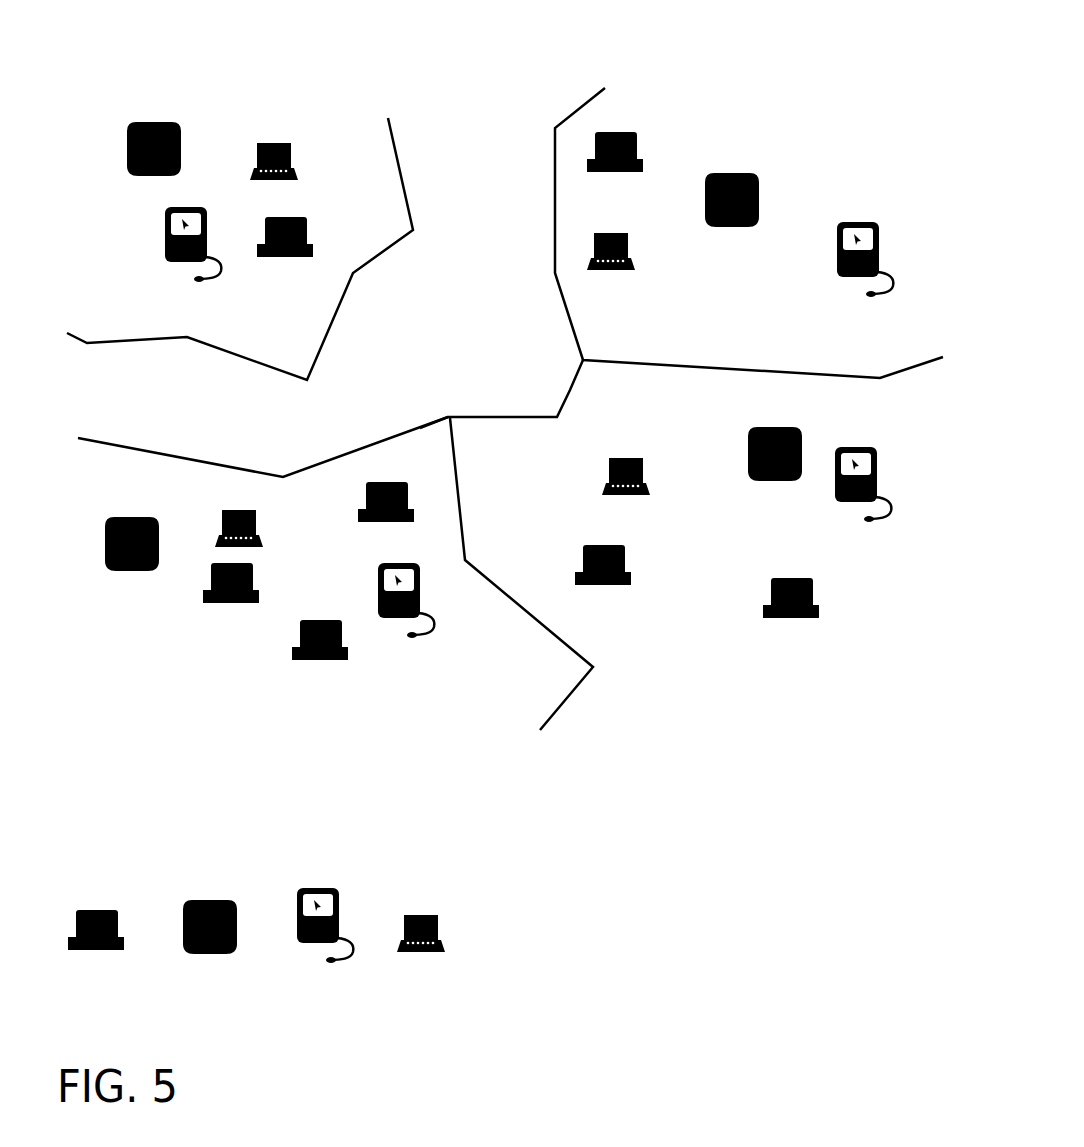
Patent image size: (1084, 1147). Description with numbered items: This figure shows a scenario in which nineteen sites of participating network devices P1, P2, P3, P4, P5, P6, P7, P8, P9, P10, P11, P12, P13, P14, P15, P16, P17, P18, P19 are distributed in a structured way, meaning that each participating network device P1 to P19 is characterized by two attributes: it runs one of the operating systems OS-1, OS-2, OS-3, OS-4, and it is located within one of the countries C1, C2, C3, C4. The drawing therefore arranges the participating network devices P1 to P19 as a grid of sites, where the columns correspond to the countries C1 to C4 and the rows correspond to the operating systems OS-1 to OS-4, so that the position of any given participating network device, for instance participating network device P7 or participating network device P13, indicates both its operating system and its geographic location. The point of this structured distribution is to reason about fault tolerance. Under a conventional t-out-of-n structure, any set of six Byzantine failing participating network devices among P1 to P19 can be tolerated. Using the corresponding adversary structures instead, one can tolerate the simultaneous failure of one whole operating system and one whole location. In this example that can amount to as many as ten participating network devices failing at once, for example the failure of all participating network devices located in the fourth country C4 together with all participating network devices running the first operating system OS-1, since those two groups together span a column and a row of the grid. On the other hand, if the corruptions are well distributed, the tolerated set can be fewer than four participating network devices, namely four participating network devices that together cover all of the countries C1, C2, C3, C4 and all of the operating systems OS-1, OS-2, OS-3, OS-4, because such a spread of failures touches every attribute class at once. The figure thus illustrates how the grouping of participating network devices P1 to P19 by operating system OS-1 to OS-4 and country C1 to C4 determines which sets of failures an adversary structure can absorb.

The country C1 is at (226, 73).
The country C2 is at (808, 85).
The country C3 is at (846, 708).
The country C4 is at (178, 722).
The participating network device P1 is at (166, 260).
The participating network device P2 is at (287, 257).
The participating network device P3 is at (128, 170).
The participating network device P4 is at (293, 162).
The participating network device P5 is at (637, 145).
The participating network device P6 is at (612, 270).
The participating network device P7 is at (733, 228).
The participating network device P8 is at (838, 273).
The participating network device P9 is at (608, 587).
The participating network device P10 is at (790, 620).
The participating network device P11 is at (623, 458).
The participating network device P12 is at (751, 477).
The participating network device P13 is at (839, 500).
The participating network device P14 is at (422, 593).
The participating network device P15 is at (320, 660).
The participating network device P16 is at (362, 495).
The participating network device P17 is at (232, 603).
The participating network device P18 is at (222, 512).
The participating network device P19 is at (106, 567).
The operating system OS-1 is at (96, 953).
The operating system OS-2 is at (212, 948).
The operating system OS-3 is at (323, 942).
The operating system OS-4 is at (425, 956).